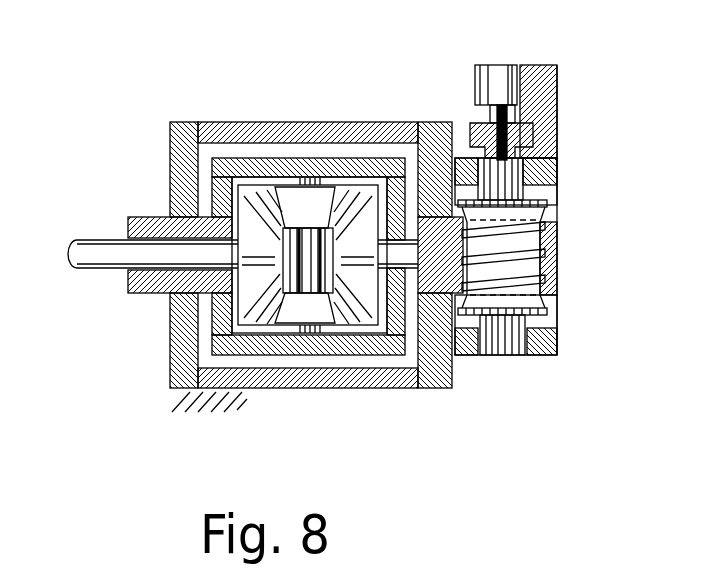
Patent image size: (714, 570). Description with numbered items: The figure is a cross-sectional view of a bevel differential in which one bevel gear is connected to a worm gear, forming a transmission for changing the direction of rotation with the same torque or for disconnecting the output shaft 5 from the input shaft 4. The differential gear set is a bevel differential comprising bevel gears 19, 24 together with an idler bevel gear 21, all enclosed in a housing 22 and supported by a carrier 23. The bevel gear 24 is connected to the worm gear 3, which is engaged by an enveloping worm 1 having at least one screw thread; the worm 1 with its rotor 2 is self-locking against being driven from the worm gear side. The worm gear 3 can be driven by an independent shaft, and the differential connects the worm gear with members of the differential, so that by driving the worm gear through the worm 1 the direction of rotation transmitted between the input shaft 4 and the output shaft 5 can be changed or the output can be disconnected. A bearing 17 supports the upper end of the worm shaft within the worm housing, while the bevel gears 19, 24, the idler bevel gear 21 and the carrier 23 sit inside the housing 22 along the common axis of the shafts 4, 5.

The enveloping worm 1 is at (470, 158).
The rotor 2 is at (512, 292).
The worm gear 3 is at (545, 342).
The input shaft 4 is at (107, 255).
The output shaft 5 is at (162, 218).
The upper bearing 17 is at (493, 84).
The bevel gear 19 is at (250, 222).
The idler bevel gear 21 is at (279, 192).
The housing 22 is at (178, 338).
The carrier 23 is at (255, 352).
The bevel gear 24 is at (371, 188).